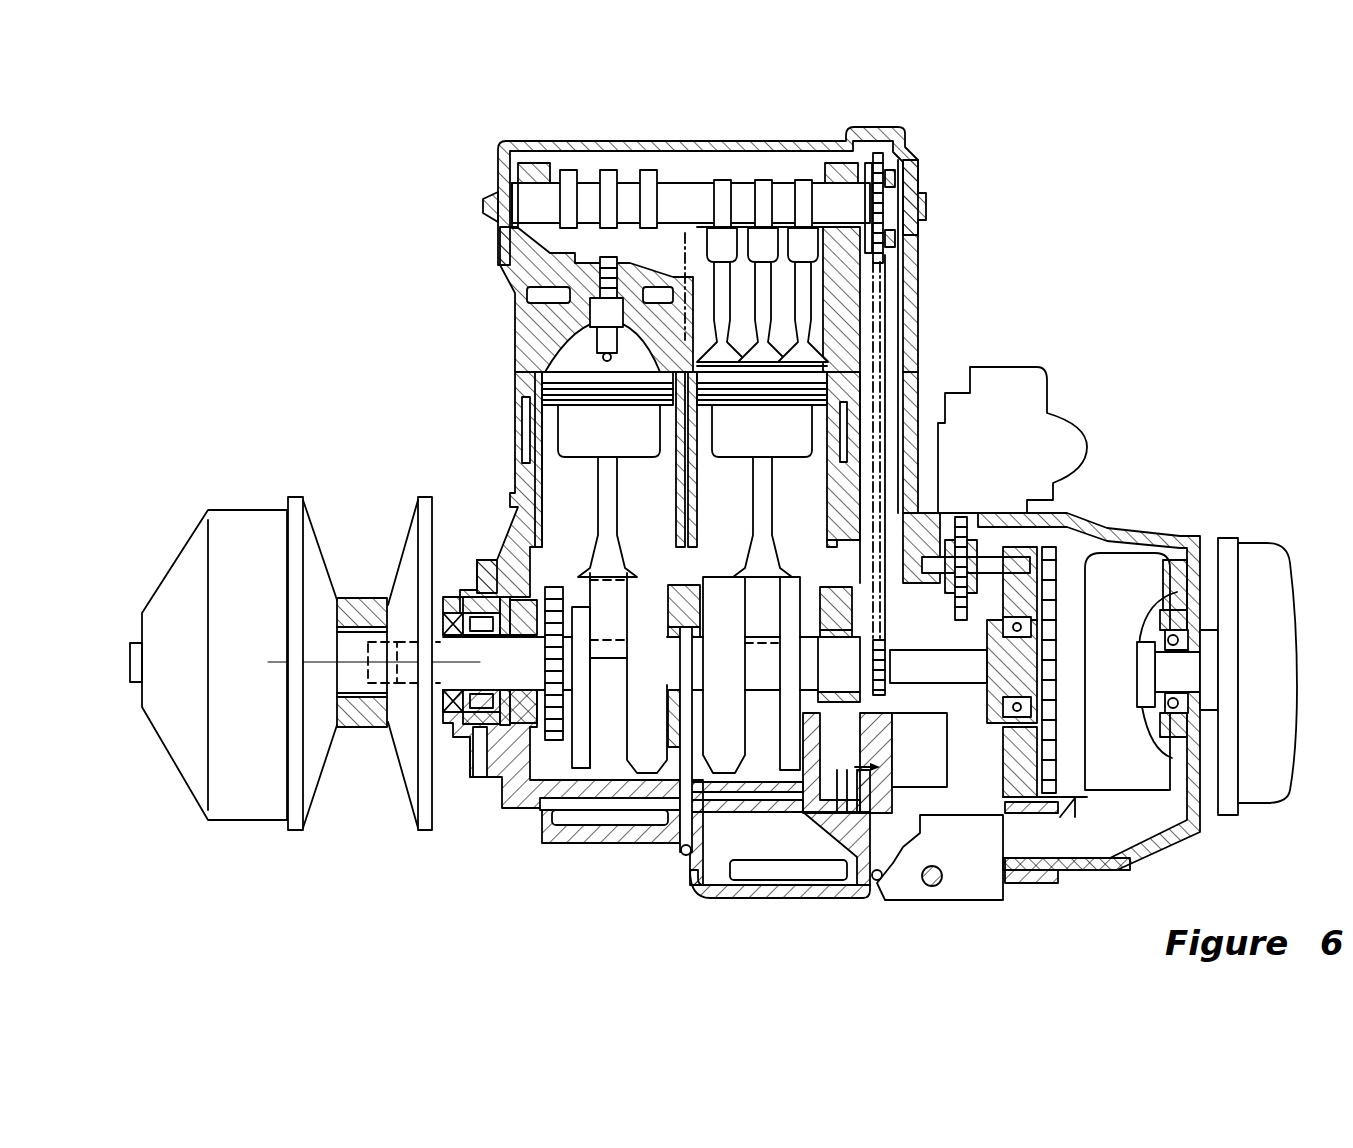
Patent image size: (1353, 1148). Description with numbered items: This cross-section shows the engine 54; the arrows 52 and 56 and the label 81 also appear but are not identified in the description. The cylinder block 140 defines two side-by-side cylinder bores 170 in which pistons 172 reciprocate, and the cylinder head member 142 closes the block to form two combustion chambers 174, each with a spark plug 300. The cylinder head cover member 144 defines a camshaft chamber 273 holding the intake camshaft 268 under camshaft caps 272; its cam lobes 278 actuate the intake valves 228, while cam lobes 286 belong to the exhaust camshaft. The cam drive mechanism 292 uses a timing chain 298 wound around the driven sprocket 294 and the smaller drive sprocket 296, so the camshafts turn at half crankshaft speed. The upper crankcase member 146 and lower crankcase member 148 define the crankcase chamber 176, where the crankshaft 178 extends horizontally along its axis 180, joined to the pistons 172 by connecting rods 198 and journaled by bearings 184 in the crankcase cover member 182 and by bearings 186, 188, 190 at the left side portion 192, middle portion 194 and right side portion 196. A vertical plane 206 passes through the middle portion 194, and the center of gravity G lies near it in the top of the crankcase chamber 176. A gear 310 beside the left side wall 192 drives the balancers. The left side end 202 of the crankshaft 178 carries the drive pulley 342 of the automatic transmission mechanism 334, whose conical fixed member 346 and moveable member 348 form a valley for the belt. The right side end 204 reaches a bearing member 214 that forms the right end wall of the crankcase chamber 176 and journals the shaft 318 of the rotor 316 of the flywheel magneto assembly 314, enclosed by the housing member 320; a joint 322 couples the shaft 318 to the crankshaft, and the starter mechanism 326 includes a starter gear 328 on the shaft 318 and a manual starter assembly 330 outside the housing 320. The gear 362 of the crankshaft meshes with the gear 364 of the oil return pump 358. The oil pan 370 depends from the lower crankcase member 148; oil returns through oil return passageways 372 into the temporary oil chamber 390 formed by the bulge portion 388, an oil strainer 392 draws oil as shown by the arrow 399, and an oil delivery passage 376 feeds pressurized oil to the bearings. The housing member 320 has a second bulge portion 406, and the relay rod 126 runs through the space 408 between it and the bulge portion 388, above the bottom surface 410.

The engine 52 is at (1186, 270).
The engine 54 is at (1103, 283).
The drive clutch 56 is at (200, 449).
The valve cover 81 is at (892, 145).
The relay rod 126 is at (932, 887).
The cylinder block 140 is at (515, 390).
The cylinder head member 142 is at (498, 232).
The cylinder head cover member 144 is at (498, 152).
The upper crankcase member 146 is at (510, 540).
The lower crankcase member 148 is at (500, 807).
The cylinder bores 170 is at (543, 442).
The piston 172 is at (630, 437).
The combustion chambers 174 is at (527, 343).
The crankcase chamber 176 is at (540, 780).
The crankshaft 178 is at (595, 780).
The axis 180 is at (317, 660).
The crankcase cover member 182 is at (463, 767).
The bearings 184 is at (483, 610).
The bearing 186 is at (545, 582).
The bearing 188 is at (673, 585).
The bearing 190 is at (752, 510).
The left side portion 192 is at (497, 560).
The middle portion 194 is at (683, 598).
The right side portion 196 is at (843, 597).
The connecting rods 198 is at (603, 477).
The left side end 202 is at (397, 750).
The right side end 204 is at (932, 653).
The imaginary vertical plane 206 is at (685, 255).
The bearing member 214 is at (1017, 508).
The intake valves 228 is at (805, 288).
The intake camshaft 268 is at (627, 200).
The camshaft caps 272 is at (517, 147).
The camshaft chamber 273 is at (697, 152).
The cam lobes 278 is at (802, 180).
The cam lobes 286 is at (605, 170).
The cam drive mechanism 292 is at (892, 285).
The driven sprocket 294 is at (887, 197).
The drive sprocket 296 is at (863, 678).
The timing chain or belt 298 is at (887, 353).
The spark plug 300 is at (603, 308).
The gear 310 is at (558, 687).
The flywheel magneto assembly 314 is at (1195, 537).
The rotor 316 is at (1127, 567).
The shaft 318 is at (1023, 672).
The housing member 320 is at (1162, 808).
The joint 322 is at (1042, 760).
The starter mechanism 326 is at (1068, 614).
The starter gear 328 is at (1057, 563).
The manual starter assembly 330 is at (1260, 570).
The automatic transmission mechanism 334 is at (164, 547).
The drive pulley 342 is at (330, 757).
The fixed member 346 is at (357, 728).
The moveable member 348 is at (317, 572).
The oil return pump 358 is at (936, 756).
The gear 362 is at (973, 703).
The gear 364 is at (978, 733).
The oil pan 370 is at (614, 848).
The oil return passageways 372 is at (980, 813).
The oil delivery passage 376 is at (670, 733).
The bulge portion 388 is at (727, 902).
The temporary oil chamber 390 is at (760, 850).
The oil strainer 392 is at (830, 872).
The arrow 399 is at (793, 827).
The second bulge portion 406 is at (1047, 877).
The space 408 is at (970, 850).
The bottom surface 410 is at (798, 900).
The center of gravity G is at (690, 530).